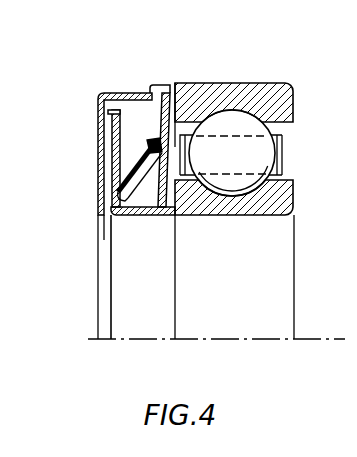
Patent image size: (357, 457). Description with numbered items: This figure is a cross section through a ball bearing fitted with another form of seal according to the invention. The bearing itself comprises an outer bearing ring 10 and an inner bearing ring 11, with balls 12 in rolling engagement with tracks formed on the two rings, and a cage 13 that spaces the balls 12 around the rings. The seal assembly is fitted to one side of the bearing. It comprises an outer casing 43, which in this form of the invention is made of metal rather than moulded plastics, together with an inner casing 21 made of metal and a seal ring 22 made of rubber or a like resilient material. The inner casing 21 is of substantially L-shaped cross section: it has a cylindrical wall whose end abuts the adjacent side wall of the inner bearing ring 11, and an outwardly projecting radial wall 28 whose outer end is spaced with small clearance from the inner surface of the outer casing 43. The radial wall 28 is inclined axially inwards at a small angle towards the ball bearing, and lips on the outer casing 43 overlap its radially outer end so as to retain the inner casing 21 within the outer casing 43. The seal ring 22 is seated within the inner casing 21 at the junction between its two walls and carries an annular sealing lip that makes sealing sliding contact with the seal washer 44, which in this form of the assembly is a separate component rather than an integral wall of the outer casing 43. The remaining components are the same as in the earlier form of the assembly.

The outer bearing ring 10 is at (284, 96).
The inner bearing ring 11 is at (275, 205).
The balls 12 is at (270, 148).
The cage 13 is at (283, 165).
The inner casing 21 is at (122, 221).
The seal ring 22 is at (117, 191).
The radial wall 28 is at (118, 146).
The outer casing 43 is at (173, 84).
The seal washer 44 is at (123, 124).